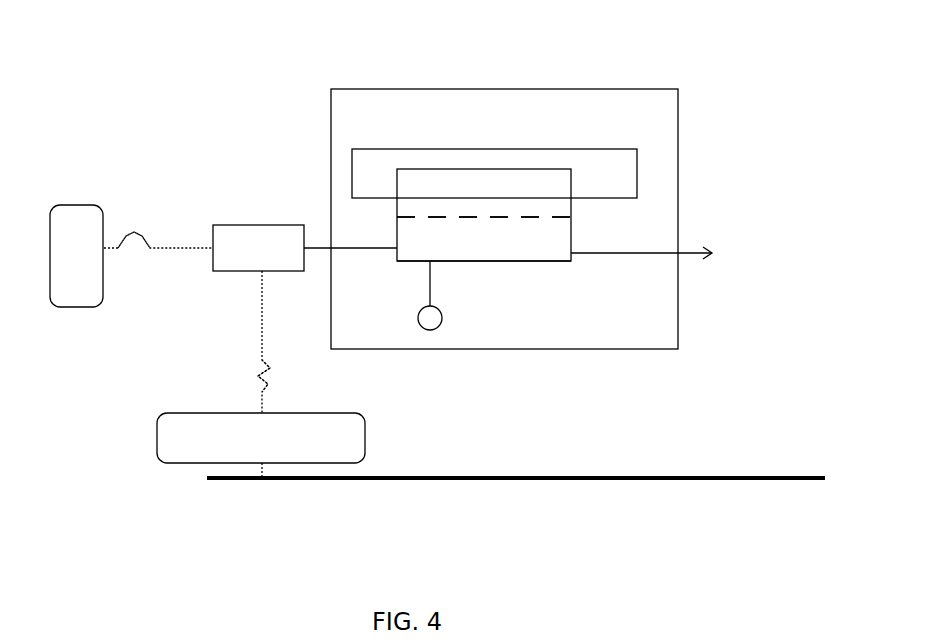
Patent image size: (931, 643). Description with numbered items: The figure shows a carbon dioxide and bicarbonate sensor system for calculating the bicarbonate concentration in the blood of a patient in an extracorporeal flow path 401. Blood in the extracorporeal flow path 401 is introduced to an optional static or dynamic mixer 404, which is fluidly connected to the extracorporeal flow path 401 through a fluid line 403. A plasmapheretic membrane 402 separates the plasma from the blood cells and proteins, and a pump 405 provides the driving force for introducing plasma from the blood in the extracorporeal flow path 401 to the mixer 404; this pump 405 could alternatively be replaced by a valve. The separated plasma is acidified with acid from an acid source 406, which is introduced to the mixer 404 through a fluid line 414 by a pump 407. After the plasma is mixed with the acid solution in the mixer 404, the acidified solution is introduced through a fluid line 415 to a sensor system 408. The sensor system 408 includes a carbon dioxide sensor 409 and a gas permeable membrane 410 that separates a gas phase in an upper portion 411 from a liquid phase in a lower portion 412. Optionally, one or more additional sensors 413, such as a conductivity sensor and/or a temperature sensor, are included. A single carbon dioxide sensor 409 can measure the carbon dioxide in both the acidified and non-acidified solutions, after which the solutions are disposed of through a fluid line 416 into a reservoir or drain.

The extracorporeal flow path 401 is at (533, 482).
The plasmapheretic membrane 402 is at (261, 445).
The fluid line 403 is at (258, 310).
The mixer 404 is at (258, 248).
The pump 405 is at (233, 373).
The acid source 406 is at (76, 256).
The pump 407 is at (137, 250).
The sensor system 408 is at (514, 86).
The carbon dioxide sensor 409 is at (556, 160).
The gas permeable membrane 410 is at (551, 219).
The gas phase portion 411 is at (484, 215).
The liquid phase portion 412 is at (484, 239).
The additional sensor 413 is at (446, 318).
The fluid line 414 is at (182, 245).
The fluid line 415 is at (318, 246).
The fluid line 416 is at (690, 257).